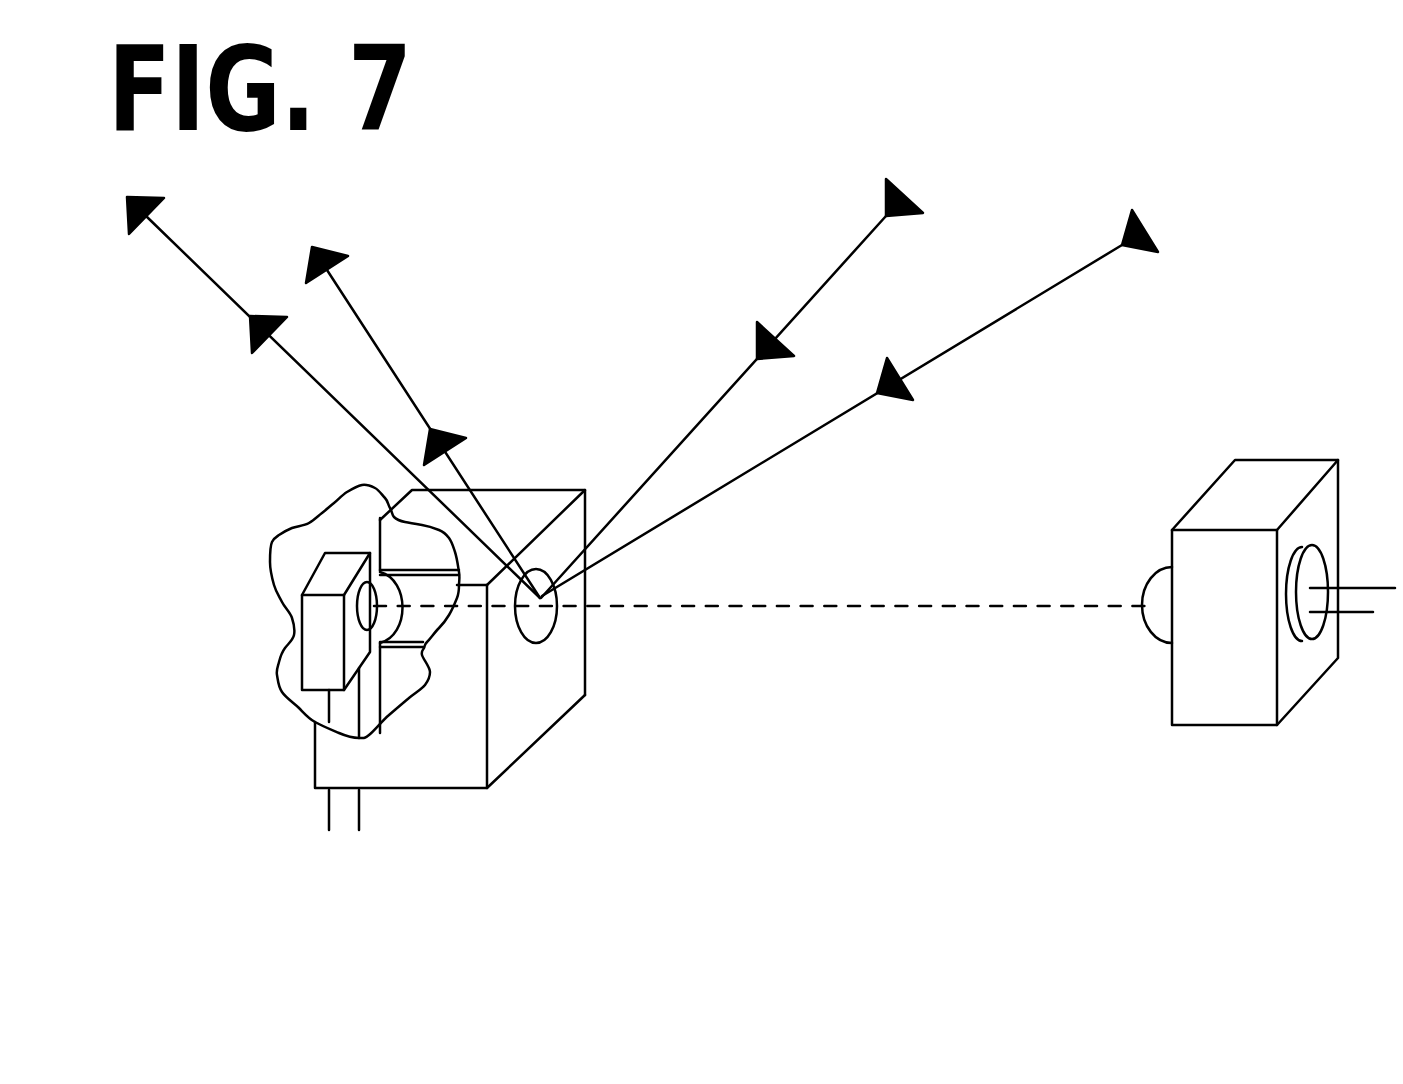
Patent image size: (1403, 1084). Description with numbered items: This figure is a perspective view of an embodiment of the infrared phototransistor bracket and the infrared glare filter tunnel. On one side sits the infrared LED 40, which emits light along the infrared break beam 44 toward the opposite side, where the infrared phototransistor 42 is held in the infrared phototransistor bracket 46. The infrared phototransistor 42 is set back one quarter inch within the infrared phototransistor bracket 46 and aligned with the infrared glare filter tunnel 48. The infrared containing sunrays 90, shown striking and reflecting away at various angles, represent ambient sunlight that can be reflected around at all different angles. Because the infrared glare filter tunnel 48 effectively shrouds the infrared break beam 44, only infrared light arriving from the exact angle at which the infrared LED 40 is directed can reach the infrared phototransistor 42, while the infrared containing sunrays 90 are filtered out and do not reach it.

The infrared LED 40 is at (1155, 608).
The infrared phototransistor 42 is at (317, 633).
The infrared break beam 44 is at (800, 615).
The infrared phototransistor bracket 46 is at (440, 760).
The infrared glare filter tunnel 48 is at (540, 622).
The infrared containing sunrays 90 is at (848, 249).